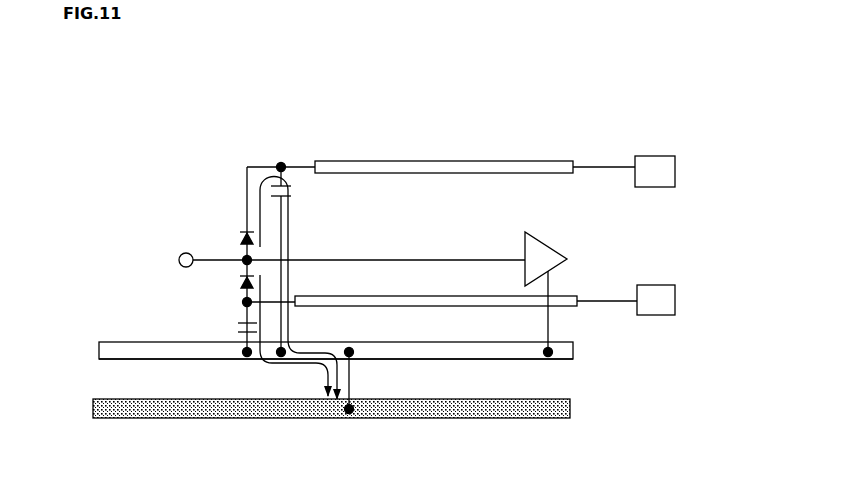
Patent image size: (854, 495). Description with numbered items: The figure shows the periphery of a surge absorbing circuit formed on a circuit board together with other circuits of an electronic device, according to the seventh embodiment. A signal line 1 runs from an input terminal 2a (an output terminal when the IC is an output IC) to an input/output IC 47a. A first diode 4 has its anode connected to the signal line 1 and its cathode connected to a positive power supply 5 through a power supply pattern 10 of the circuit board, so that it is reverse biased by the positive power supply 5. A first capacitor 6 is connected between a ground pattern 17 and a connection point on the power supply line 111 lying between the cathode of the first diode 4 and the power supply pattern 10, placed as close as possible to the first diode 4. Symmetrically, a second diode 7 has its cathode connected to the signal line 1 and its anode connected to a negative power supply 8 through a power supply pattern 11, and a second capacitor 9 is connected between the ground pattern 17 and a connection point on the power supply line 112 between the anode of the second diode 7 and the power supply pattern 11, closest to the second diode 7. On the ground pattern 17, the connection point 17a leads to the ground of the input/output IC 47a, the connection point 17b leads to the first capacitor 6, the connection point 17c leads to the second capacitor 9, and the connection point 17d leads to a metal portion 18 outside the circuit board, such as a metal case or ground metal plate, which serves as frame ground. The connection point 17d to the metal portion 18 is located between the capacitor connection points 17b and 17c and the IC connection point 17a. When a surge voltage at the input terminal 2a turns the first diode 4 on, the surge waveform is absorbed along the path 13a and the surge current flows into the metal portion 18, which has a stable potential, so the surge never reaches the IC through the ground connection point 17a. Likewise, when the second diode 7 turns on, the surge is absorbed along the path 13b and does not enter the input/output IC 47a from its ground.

The signal line 1 is at (448, 253).
The input terminal 2a is at (175, 252).
The first diode 4 is at (227, 227).
The positive power supply 5 is at (655, 166).
The first capacitor 6 is at (288, 178).
The second diode 7 is at (230, 284).
The negative power supply 8 is at (658, 300).
The second capacitor 9 is at (230, 329).
The power supply pattern 10 is at (505, 155).
The power supply pattern 11 is at (562, 310).
The path 13a is at (260, 175).
The path 13b is at (252, 310).
The ground pattern 17 is at (430, 353).
The connection point to input/output IC 17a is at (552, 363).
The connection point to first capacitor 17b is at (283, 358).
The connection point to second capacitor 17c is at (243, 358).
The connection point to metal portion 17d is at (355, 355).
The metal portion 18 is at (568, 415).
The input/output IC 47a is at (555, 242).
The power supply line 111 is at (265, 163).
The power supply line 112 is at (273, 298).